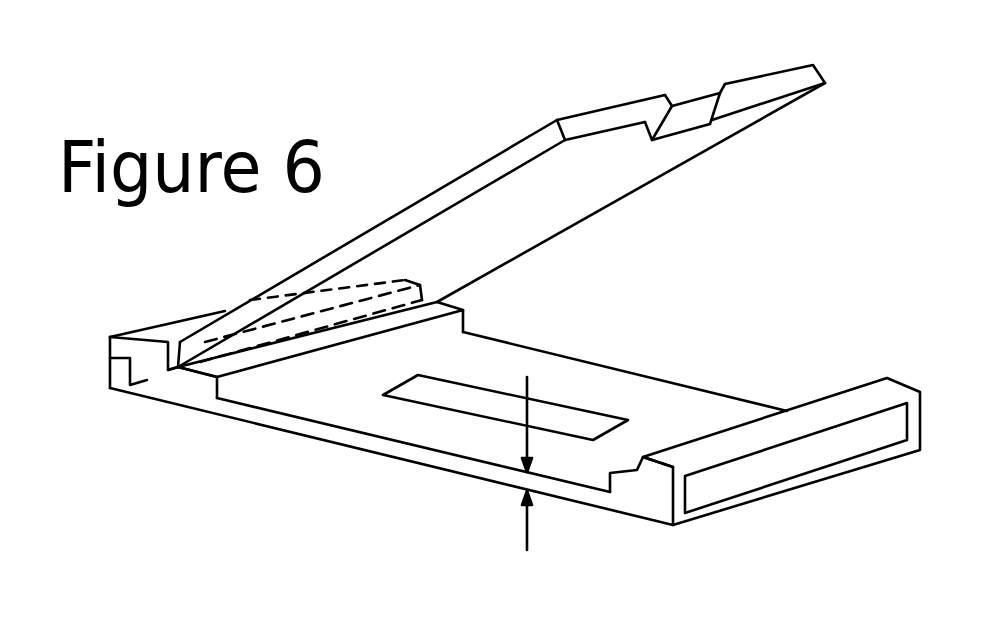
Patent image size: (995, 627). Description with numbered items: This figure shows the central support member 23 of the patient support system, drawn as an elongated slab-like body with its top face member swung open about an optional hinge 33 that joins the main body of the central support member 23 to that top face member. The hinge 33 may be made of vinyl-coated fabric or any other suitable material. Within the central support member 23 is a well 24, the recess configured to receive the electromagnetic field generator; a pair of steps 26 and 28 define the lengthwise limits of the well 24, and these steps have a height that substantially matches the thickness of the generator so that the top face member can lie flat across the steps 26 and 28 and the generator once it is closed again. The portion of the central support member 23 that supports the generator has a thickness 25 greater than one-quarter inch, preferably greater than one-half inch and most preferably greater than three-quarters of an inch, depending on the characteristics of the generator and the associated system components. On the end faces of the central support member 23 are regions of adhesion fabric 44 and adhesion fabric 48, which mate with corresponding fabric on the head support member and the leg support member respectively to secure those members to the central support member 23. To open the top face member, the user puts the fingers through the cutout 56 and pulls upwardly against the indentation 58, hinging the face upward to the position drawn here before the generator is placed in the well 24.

The central support member 23 is at (283, 434).
The well 24 is at (452, 444).
The thickness 25 is at (530, 527).
The step 26 is at (207, 385).
The step 28 is at (622, 487).
The hinge 33 is at (175, 362).
The adhesion fabric 44 is at (820, 450).
The adhesion fabric 48 is at (108, 360).
The cutout 56 is at (693, 92).
The indentation 58 is at (697, 118).